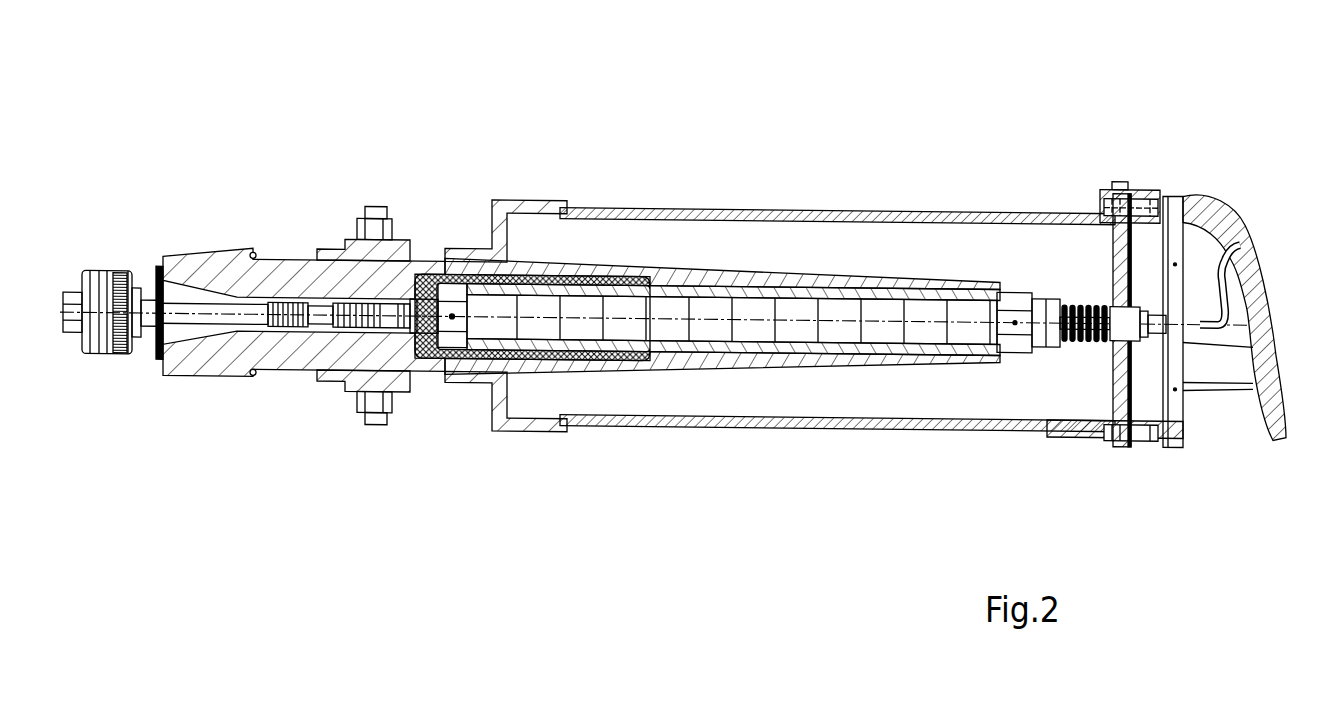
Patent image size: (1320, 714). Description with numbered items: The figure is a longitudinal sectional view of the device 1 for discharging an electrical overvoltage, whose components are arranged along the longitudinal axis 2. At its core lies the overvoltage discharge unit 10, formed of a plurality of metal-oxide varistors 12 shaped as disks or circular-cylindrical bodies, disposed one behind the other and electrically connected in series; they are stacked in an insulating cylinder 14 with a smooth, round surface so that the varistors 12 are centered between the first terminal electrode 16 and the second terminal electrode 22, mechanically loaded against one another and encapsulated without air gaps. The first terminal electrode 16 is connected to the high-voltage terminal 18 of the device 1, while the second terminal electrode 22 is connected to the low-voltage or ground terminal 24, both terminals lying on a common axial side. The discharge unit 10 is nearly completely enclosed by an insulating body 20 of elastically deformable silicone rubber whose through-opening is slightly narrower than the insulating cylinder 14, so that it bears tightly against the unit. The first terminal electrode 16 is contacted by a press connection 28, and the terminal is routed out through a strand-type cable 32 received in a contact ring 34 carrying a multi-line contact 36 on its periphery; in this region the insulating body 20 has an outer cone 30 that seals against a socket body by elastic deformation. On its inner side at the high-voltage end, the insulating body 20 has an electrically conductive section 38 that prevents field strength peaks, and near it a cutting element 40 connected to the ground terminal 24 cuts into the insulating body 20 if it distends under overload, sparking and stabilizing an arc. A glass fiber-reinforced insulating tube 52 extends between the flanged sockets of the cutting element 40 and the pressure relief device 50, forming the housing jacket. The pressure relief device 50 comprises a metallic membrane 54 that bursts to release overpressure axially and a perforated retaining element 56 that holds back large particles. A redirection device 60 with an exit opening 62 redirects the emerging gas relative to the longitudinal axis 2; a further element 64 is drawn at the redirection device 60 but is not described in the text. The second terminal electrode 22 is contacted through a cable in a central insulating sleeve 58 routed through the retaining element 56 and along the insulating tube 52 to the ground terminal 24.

The device 1 is at (526, 485).
The longitudinal axis 2 is at (630, 317).
The overvoltage discharge unit 10 is at (712, 336).
The varistors 12 is at (760, 332).
The insulating cylinder 14 is at (838, 345).
The first terminal electrode 16 is at (455, 335).
The high-voltage terminal 18 is at (118, 218).
The insulating body 20 is at (703, 268).
The second terminal electrode 22 is at (1010, 343).
The low-voltage or ground terminal 24 is at (389, 180).
The press connection 28 is at (317, 323).
The outer cone 30 is at (210, 250).
The strand-type cable 32 is at (207, 313).
The contact ring 34 is at (93, 353).
The multi-line contact 36 is at (115, 350).
The electrically conductive section 38 is at (607, 270).
The cutting element 40 is at (512, 200).
The pressure relief device 50 is at (1113, 174).
The insulating tube 52 is at (816, 212).
The membrane 54 is at (1188, 215).
The retaining element 56 is at (1023, 213).
The central insulating sleeve 58 is at (1077, 340).
The redirection device 60 is at (1262, 217).
The exit opening 62 is at (1210, 330).
The hook pipe 64 is at (1245, 375).